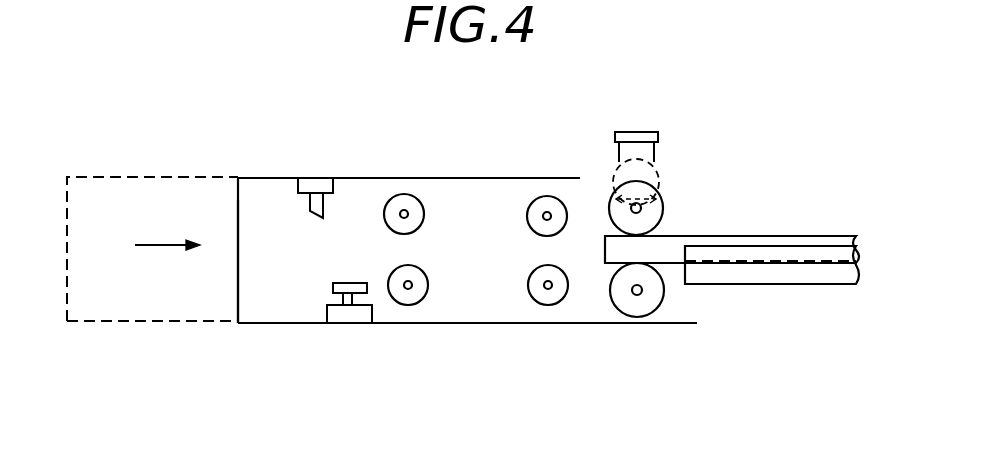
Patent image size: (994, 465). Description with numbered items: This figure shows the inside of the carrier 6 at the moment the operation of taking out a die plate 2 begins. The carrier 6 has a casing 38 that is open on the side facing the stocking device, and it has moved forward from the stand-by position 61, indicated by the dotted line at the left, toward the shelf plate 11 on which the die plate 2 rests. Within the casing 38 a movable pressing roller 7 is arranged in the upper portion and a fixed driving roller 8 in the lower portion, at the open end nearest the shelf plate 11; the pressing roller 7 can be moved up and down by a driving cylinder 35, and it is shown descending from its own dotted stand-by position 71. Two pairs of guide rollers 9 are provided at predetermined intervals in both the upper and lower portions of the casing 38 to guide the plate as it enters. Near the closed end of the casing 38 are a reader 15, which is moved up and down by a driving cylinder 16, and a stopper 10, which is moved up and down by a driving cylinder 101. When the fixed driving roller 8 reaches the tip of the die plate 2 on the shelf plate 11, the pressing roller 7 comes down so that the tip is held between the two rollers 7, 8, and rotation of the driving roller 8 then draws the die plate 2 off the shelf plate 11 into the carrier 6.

The die plate 2 is at (678, 242).
The carrier 6 is at (254, 168).
The movable pressing roller 7 is at (663, 210).
The fixed driving roller 8 is at (647, 305).
The guide rollers 9 is at (533, 200).
The stopper 10 is at (300, 192).
The shelf plate 11 is at (751, 275).
The reader 15 is at (330, 284).
The driving cylinder 16 is at (352, 310).
The driving cylinder 35 is at (632, 132).
The casing 38 is at (248, 324).
The stand-by position 61 is at (102, 164).
The stand-by position 71 is at (652, 158).
The driving cylinder 101 is at (327, 180).